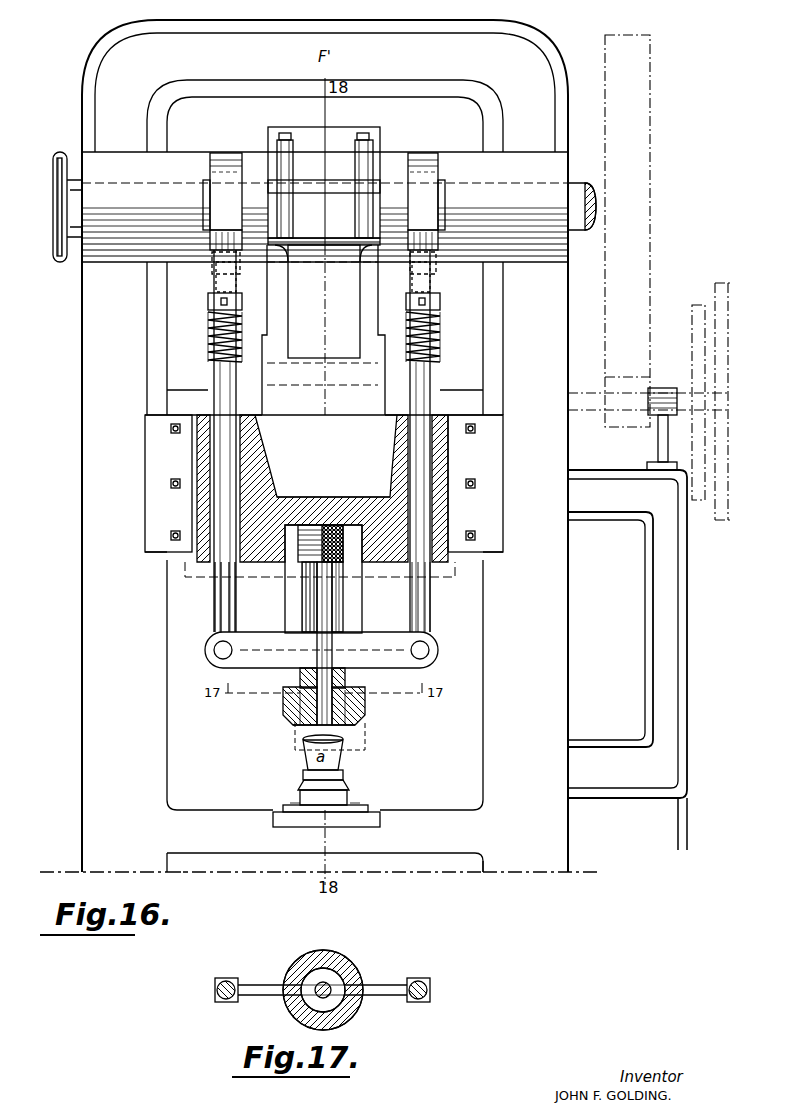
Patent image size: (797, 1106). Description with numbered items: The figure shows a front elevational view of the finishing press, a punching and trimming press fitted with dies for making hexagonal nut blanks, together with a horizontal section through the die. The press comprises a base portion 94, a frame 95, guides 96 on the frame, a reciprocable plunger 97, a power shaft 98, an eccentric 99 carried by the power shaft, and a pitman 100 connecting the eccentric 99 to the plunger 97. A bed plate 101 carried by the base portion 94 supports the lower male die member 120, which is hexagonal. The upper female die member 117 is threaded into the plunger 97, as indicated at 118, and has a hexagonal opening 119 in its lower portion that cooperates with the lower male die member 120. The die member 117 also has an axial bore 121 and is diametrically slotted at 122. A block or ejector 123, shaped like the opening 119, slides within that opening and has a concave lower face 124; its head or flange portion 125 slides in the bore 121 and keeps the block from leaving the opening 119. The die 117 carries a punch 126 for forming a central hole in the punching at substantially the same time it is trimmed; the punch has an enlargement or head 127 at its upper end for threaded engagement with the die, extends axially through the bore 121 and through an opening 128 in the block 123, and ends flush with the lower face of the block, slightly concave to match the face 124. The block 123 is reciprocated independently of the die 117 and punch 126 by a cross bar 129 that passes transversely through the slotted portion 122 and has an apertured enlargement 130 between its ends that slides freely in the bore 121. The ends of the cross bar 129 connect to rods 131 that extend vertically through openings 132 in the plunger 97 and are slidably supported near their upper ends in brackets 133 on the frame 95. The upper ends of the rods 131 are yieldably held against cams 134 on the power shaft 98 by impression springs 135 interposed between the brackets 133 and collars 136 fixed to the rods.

In FIG. 16, the base portion 94 is at (431, 843).
In FIG. 16, the frame 95 is at (90, 352).
In FIG. 16, the guides 96 is at (147, 395).
In FIG. 16, the plunger 97 is at (324, 488).
In FIG. 16, the power shaft 98 is at (185, 192).
In FIG. 16, the eccentric 99 is at (350, 142).
In FIG. 16, the pitman 100 is at (323, 330).
In FIG. 16, the bed plate 101 is at (315, 820).
In FIG. 16, the upper female die member 117 is at (366, 708).
In FIG. 17, the upper female die member 117 is at (352, 968).
In FIG. 16, the threaded connection 118 is at (362, 553).
In FIG. 16, the hexagonal opening 119 is at (300, 727).
In FIG. 16, the lower male die member 120 is at (338, 795).
In FIG. 16, the axial bore 121 is at (302, 599).
In FIG. 16, the slotted portion 122 is at (355, 606).
In FIG. 16, the block or ejector 123 is at (283, 703).
In FIG. 16, the concave lower face 124 is at (303, 730).
In FIG. 16, the head or flange portion 125 is at (300, 681).
In FIG. 16, the punch 126 is at (332, 618).
In FIG. 17, the punch 126 is at (320, 984).
In FIG. 16, the enlargement or head 127 is at (323, 497).
In FIG. 16, the opening 128 is at (345, 695).
In FIG. 17, the cross bar 129 is at (258, 985).
In FIG. 16, the apertured enlargement 130 is at (312, 650).
In FIG. 17, the apertured enlargement 130 is at (333, 999).
In FIG. 16, the rods 131 is at (216, 610).
In FIG. 17, the rods 131 is at (215, 991).
In FIG. 16, the openings 132 is at (212, 468).
In FIG. 16, the brackets 133 is at (198, 365).
In FIG. 16, the cams 134 is at (238, 143).
In FIG. 16, the impression springs 135 is at (208, 300).
In FIG. 16, the collars 136 is at (214, 262).